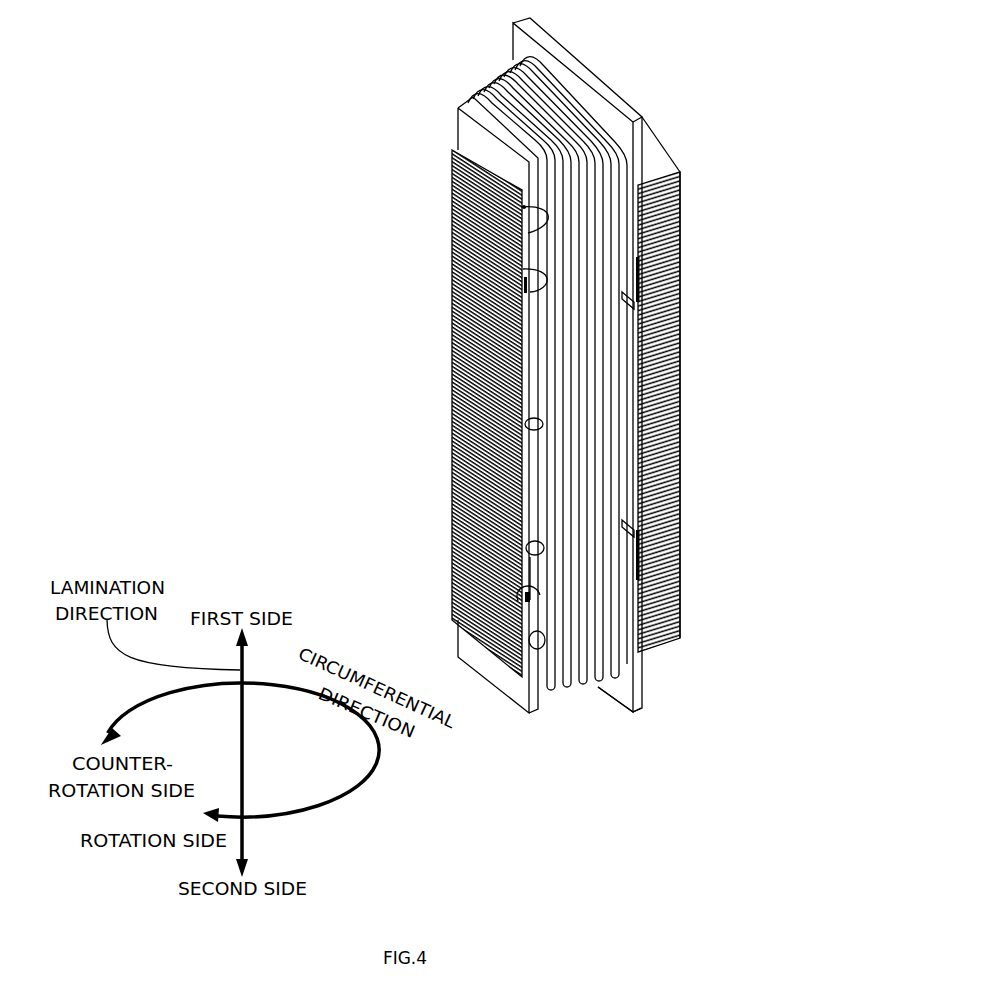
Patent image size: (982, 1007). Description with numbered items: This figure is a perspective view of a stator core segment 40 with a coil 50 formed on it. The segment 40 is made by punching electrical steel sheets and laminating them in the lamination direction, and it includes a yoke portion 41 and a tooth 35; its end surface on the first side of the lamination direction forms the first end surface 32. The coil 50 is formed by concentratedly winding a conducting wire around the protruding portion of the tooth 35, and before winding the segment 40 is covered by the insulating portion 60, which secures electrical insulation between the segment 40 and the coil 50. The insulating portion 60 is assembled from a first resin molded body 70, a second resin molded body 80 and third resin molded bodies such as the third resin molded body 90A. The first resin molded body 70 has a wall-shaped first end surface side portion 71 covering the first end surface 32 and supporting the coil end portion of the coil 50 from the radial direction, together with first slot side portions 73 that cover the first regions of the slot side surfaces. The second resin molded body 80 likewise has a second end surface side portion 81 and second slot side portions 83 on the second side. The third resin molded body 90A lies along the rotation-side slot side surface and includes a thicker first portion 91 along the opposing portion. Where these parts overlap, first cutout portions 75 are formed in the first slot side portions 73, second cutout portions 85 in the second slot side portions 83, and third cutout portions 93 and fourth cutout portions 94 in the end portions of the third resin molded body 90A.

The first resin molded body 70 is at (603, 50).
The first end surface side portion 71 is at (613, 85).
The first end surface 32 is at (652, 167).
The yoke portion 41 is at (683, 238).
The segment 40 is at (692, 477).
The first cutout portion 75 is at (636, 349).
The third resin molded body 90A is at (620, 390).
The second cutout portion 85 is at (518, 601).
The second end surface side portion 81 is at (645, 697).
The coil 50 is at (513, 92).
The insulating portion 60 is at (447, 92).
The second resin molded body 80 is at (488, 705).
The tooth 35 is at (497, 176).
The first slot side portion 73 is at (522, 207).
The third cutout portion 93 is at (523, 269).
The first portion 91 is at (526, 426).
The fourth cutout portion 94 is at (528, 543).
The second slot side portion 83 is at (529, 647).